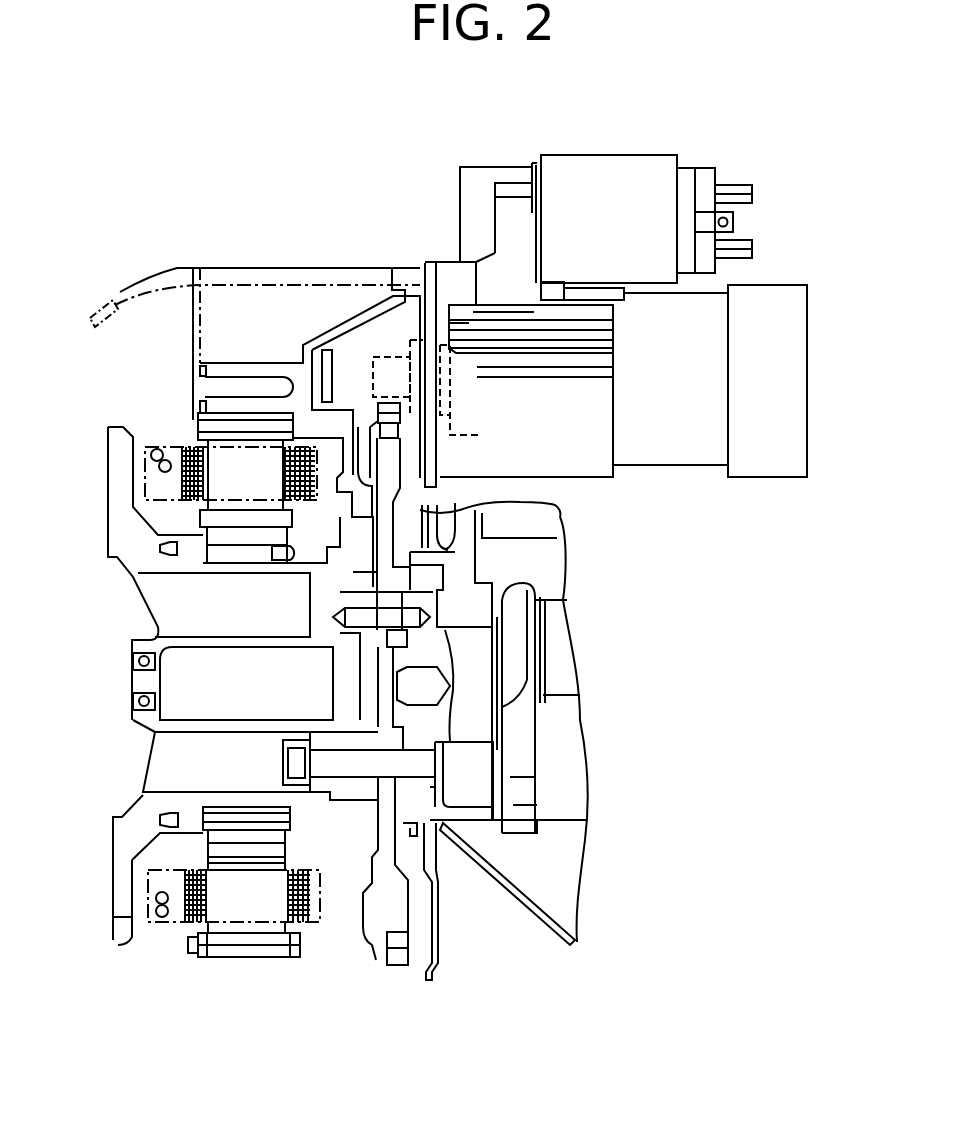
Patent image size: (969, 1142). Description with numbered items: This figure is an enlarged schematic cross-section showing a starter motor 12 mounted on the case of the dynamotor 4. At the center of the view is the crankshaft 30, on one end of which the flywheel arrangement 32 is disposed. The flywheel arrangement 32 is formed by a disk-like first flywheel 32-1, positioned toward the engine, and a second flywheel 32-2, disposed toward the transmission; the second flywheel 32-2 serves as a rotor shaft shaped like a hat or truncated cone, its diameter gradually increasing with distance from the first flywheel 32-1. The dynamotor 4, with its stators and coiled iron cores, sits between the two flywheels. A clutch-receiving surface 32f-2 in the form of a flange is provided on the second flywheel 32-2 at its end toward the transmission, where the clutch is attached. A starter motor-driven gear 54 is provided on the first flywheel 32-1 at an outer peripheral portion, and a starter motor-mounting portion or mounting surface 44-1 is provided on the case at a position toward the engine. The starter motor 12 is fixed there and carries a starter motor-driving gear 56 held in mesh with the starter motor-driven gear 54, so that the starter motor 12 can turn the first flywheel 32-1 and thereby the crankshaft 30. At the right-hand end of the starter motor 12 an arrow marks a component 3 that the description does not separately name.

The dynamotor 4 is at (177, 421).
The starter motor-driven gear 54 is at (392, 420).
The starter motor-mounting surface 44-1 is at (426, 277).
The starter motor-driving gear 56 is at (430, 340).
The starter motor 3 is at (812, 386).
The starter motor 12 is at (705, 340).
The crankshaft 30 is at (462, 723).
The flywheel arrangement 32 is at (348, 944).
The second flywheel 32-2 is at (151, 808).
The clutch-receiving surface 32f-2 is at (118, 946).
The first flywheel 32-1 is at (376, 960).